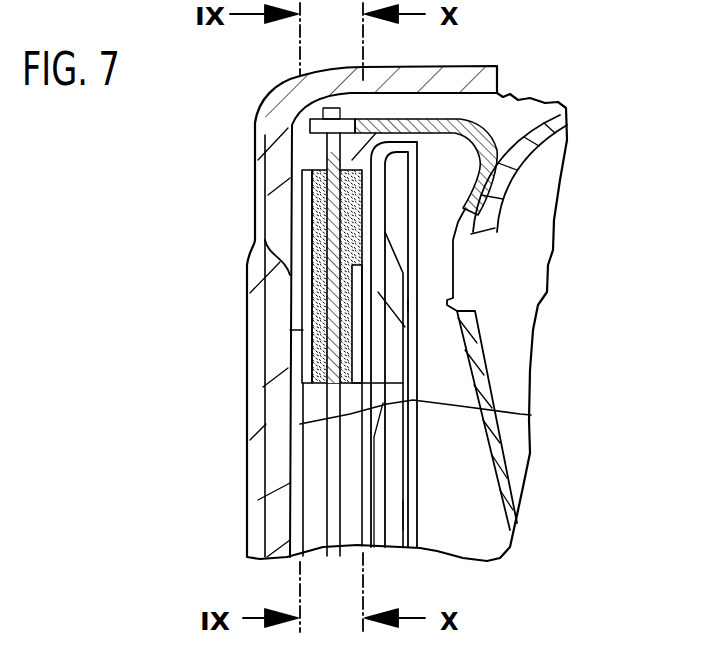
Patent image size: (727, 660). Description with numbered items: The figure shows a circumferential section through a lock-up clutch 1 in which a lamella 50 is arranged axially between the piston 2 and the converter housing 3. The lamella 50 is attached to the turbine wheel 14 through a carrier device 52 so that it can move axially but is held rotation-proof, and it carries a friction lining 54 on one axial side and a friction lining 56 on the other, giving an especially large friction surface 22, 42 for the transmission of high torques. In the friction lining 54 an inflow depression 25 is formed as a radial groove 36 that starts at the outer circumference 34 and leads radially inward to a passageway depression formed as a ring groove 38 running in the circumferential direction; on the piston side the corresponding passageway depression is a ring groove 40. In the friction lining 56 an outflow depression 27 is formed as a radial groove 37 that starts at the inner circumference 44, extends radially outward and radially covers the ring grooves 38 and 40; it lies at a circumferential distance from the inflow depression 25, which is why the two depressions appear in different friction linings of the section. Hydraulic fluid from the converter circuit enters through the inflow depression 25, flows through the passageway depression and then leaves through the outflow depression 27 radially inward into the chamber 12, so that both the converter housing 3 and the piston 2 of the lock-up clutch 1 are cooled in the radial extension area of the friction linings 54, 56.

The lock-up clutch 1 is at (403, 516).
The piston 2 is at (541, 415).
The converter housing 3 is at (268, 163).
The chamber 12 is at (312, 490).
The turbine wheel 14 is at (522, 160).
The friction surface 22 is at (327, 357).
The inflow depression 25 is at (296, 218).
The outflow depression 27 is at (375, 353).
The outer circumference 34 is at (437, 72).
The radial groove 36 is at (297, 187).
The radial groove 37 is at (420, 371).
The ring groove 38 is at (275, 265).
The ring groove 40 is at (386, 283).
The friction surface 42 is at (372, 321).
The inner circumference 44 is at (302, 425).
The lamella 50 is at (291, 143).
The carrier device 52 is at (490, 137).
The friction lining 54 is at (307, 323).
The friction lining 56 is at (365, 228).